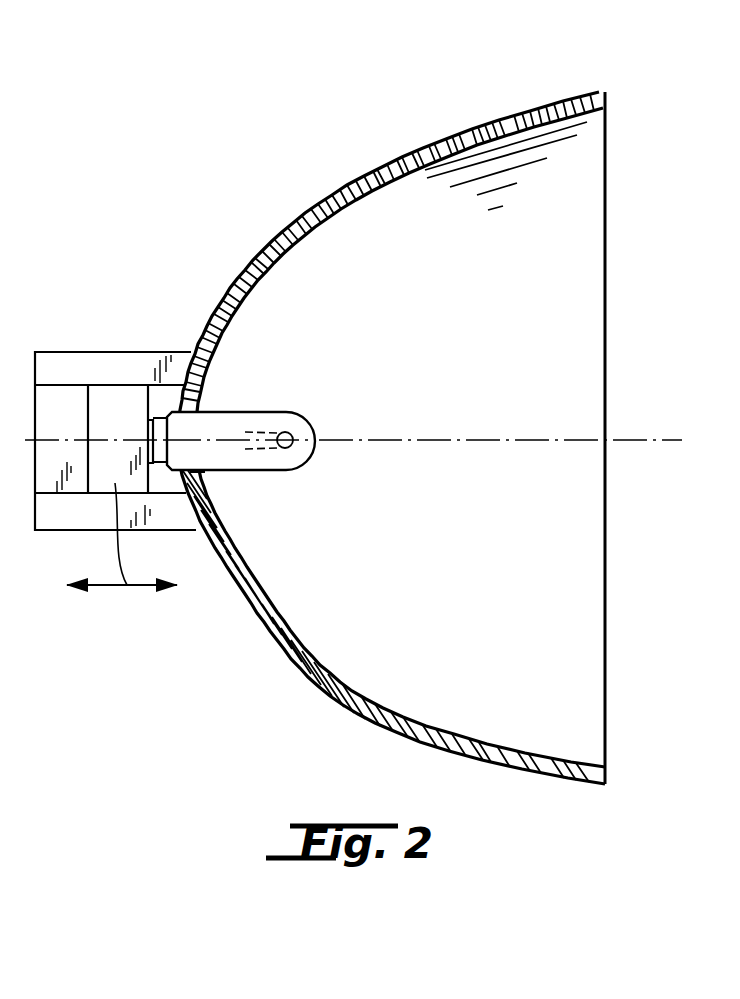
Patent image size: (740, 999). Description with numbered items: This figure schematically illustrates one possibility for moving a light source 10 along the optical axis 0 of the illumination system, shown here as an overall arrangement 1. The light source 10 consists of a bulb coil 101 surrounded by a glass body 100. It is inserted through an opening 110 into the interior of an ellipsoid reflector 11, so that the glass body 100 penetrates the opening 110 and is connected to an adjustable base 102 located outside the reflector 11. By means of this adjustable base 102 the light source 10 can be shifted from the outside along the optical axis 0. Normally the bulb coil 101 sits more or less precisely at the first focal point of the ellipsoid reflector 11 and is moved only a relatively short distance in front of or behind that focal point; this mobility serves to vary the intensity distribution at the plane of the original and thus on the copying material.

The headlamp unit 1 is at (268, 124).
The ellipsoid reflector 11 is at (448, 132).
The optical axis 0 is at (652, 440).
The adjustable base 102 is at (117, 395).
The light source 10 is at (280, 486).
The glass body 100 is at (233, 425).
The bulb coil 101 is at (307, 430).
The opening 110 is at (197, 472).